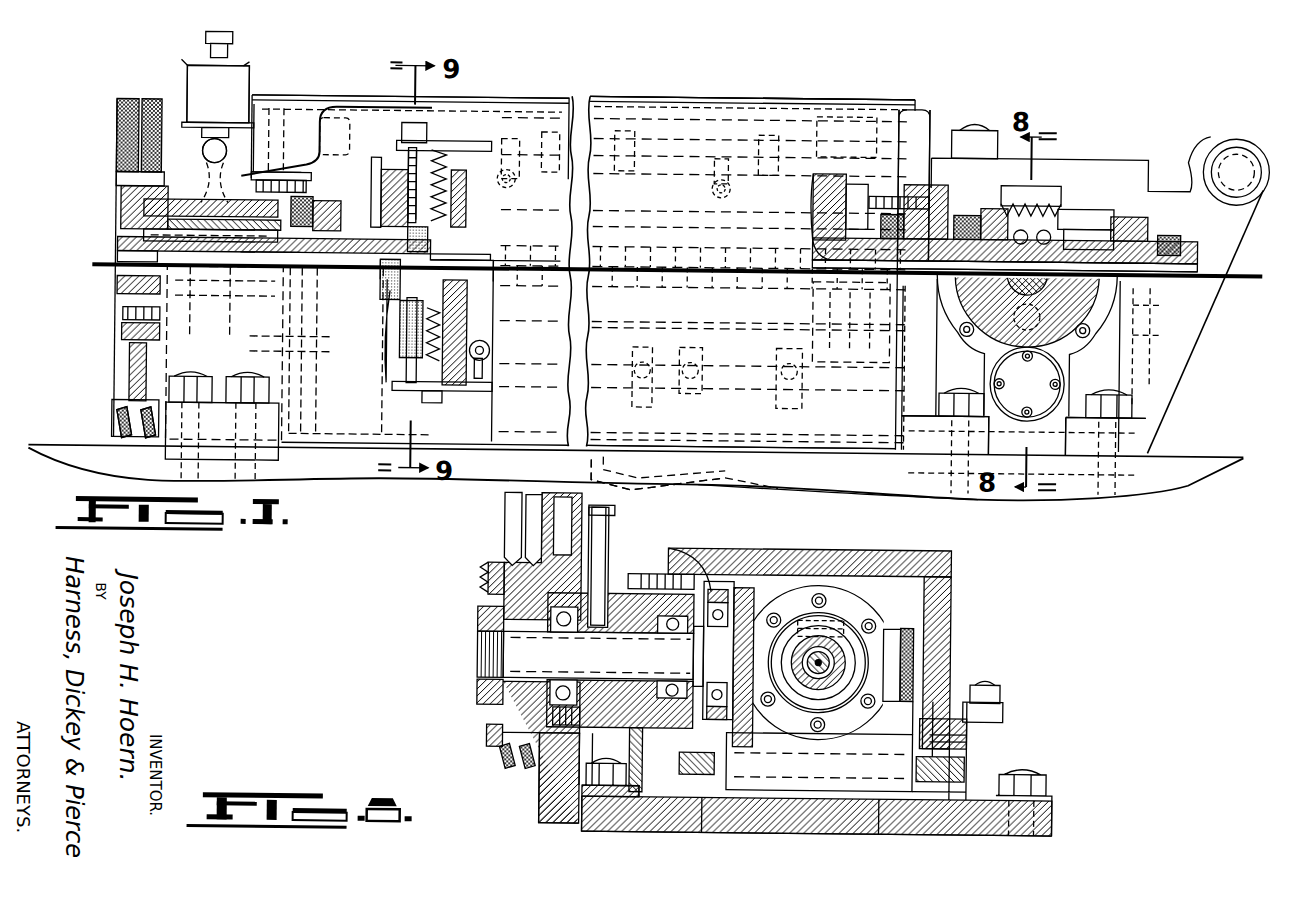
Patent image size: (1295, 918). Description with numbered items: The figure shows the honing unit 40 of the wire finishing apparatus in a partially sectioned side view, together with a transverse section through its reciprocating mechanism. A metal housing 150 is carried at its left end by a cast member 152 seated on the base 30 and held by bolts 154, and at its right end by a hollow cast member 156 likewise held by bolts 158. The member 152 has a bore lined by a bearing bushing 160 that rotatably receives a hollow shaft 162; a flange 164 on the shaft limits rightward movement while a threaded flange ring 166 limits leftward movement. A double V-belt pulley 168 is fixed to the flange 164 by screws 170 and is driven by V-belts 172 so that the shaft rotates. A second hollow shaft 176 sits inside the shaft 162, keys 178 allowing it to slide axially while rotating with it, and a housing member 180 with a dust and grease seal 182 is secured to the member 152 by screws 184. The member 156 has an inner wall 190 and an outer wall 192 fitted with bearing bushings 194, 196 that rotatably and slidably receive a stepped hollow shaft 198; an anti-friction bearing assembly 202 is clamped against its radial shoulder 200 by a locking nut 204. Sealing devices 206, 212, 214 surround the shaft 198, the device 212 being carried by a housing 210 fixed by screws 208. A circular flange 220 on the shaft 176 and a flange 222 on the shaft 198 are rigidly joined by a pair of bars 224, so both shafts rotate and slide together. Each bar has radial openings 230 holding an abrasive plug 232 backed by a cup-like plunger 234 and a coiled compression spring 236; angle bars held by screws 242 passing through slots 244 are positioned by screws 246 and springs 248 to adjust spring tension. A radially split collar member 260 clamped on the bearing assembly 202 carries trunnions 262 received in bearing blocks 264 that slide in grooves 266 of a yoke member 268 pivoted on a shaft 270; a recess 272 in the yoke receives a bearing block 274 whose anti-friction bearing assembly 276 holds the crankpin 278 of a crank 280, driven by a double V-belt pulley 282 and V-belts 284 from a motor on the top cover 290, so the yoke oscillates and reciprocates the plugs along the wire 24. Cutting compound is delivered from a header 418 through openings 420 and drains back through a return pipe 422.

In FIG. 7, the wire 24 is at (97, 268).
In FIG. 8, the wire 24 is at (818, 665).
In FIG. 7, the base 30 is at (850, 487).
In FIG. 7, the honing unit 40 is at (792, 94).
In FIG. 7, the housing 150 is at (597, 99).
In FIG. 7, the cast member 152 is at (222, 352).
In FIG. 7, the bolts 154 is at (190, 381).
In FIG. 7, the cast member 156 is at (907, 418).
In FIG. 8, the cast member 156 is at (667, 835).
In FIG. 7, the bolts 158 is at (943, 374).
In FIG. 7, the bearing bushing 160 is at (200, 212).
In FIG. 7, the hollow shaft 162 is at (137, 256).
In FIG. 7, the flange 164 is at (120, 218).
In FIG. 7, the flange ring 166 is at (313, 201).
In FIG. 7, the double V-belt pulley 168 is at (140, 366).
In FIG. 7, the screws 170 is at (123, 318).
In FIG. 7, the V-belts 172 is at (115, 441).
In FIG. 7, the second hollow shaft 176 is at (270, 257).
In FIG. 7, the keys 178 is at (210, 247).
In FIG. 7, the housing member 180 is at (310, 215).
In FIG. 7, the dust and grease seal 182 is at (337, 228).
In FIG. 7, the screws 184 is at (317, 183).
In FIG. 7, the inner wall 190 is at (860, 200).
In FIG. 7, the outer wall 192 is at (1197, 165).
In FIG. 7, the bearing bushing 194 is at (933, 200).
In FIG. 7, the bearing bushing 196 is at (1163, 225).
In FIG. 7, the hollow shaft 198 is at (877, 260).
In FIG. 8, the hollow shaft 198 is at (870, 615).
In FIG. 7, the radial shoulder 200 is at (993, 248).
In FIG. 7, the anti-friction bearing assembly 202 is at (1065, 204).
In FIG. 7, the locking nut 204 is at (1063, 224).
In FIG. 7, the sealing device 206 is at (990, 200).
In FIG. 7, the screws 208 is at (810, 202).
In FIG. 7, the housing 210 is at (810, 224).
In FIG. 7, the sealing device 212 is at (810, 240).
In FIG. 7, the sealing device 214 is at (1180, 242).
In FIG. 7, the circular flange 220 is at (367, 176).
In FIG. 7, the flange 222 is at (833, 172).
In FIG. 7, the bars 224 is at (470, 180).
In FIG. 7, the radial openings 230 is at (467, 232).
In FIG. 7, the abrasive plug 232 is at (420, 270).
In FIG. 7, the plunger 234 is at (463, 201).
In FIG. 7, the coiled compression spring 236 is at (425, 150).
In FIG. 7, the screws 242 is at (485, 362).
In FIG. 7, the slots 244 is at (520, 152).
In FIG. 7, the screws 246 is at (420, 120).
In FIG. 7, the coiled compression springs 248 is at (405, 171).
In FIG. 7, the radially split collar member 260 is at (1043, 193).
In FIG. 8, the radially split collar member 260 is at (847, 609).
In FIG. 8, the trunnions 262 is at (743, 604).
In FIG. 8, the bearing block 264 is at (753, 617).
In FIG. 8, the groove 266 is at (900, 703).
In FIG. 8, the yoke member 268 is at (860, 790).
In FIG. 8, the shaft 270 is at (937, 783).
In FIG. 8, the recess 272 is at (712, 735).
In FIG. 8, the bearing block 274 is at (720, 615).
In FIG. 8, the anti-friction bearing assembly 276 is at (703, 585).
In FIG. 8, the crankpin 278 is at (717, 641).
In FIG. 7, the crank 280 is at (1067, 353).
In FIG. 8, the crank 280 is at (613, 667).
In FIG. 8, the double V-belt pulley 282 is at (500, 590).
In FIG. 8, the V-belts 284 is at (525, 771).
In FIG. 8, the top cover 290 is at (920, 551).
In FIG. 7, the header 418 is at (360, 123).
In FIG. 7, the openings 420 is at (362, 150).
In FIG. 7, the return pipe 422 is at (727, 481).